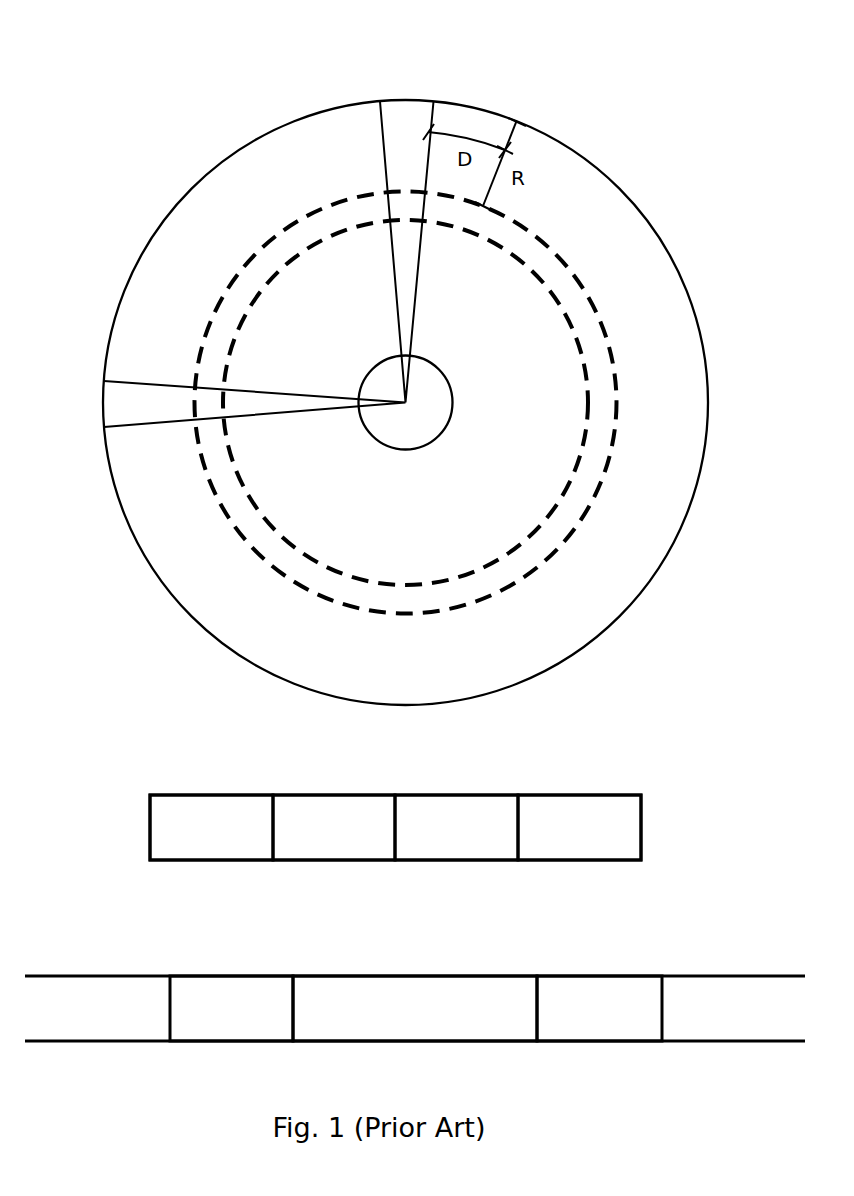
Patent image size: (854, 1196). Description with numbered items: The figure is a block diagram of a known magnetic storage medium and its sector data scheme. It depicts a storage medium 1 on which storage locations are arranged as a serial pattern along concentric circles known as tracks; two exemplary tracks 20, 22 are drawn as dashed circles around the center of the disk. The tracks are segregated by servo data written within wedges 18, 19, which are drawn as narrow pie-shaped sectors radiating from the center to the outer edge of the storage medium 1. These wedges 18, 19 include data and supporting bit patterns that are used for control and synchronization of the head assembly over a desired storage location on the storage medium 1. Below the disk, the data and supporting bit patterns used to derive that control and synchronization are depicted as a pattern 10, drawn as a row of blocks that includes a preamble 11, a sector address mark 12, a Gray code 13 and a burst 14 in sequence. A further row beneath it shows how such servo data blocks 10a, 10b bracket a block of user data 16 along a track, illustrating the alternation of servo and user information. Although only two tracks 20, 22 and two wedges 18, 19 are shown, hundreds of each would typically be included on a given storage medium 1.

The storage medium 1 is at (110, 62).
The wedge 18 is at (404, 106).
The wedge 19 is at (110, 406).
The track 20 is at (557, 292).
The track 22 is at (541, 240).
The pattern 10 is at (510, 763).
The preamble 11 is at (200, 854).
The sector address mark 12 is at (323, 854).
The Gray code 13 is at (446, 854).
The burst 14 is at (569, 854).
The servo data 10a is at (247, 1035).
The user data 16 is at (404, 1035).
The servo data 10b is at (615, 1035).